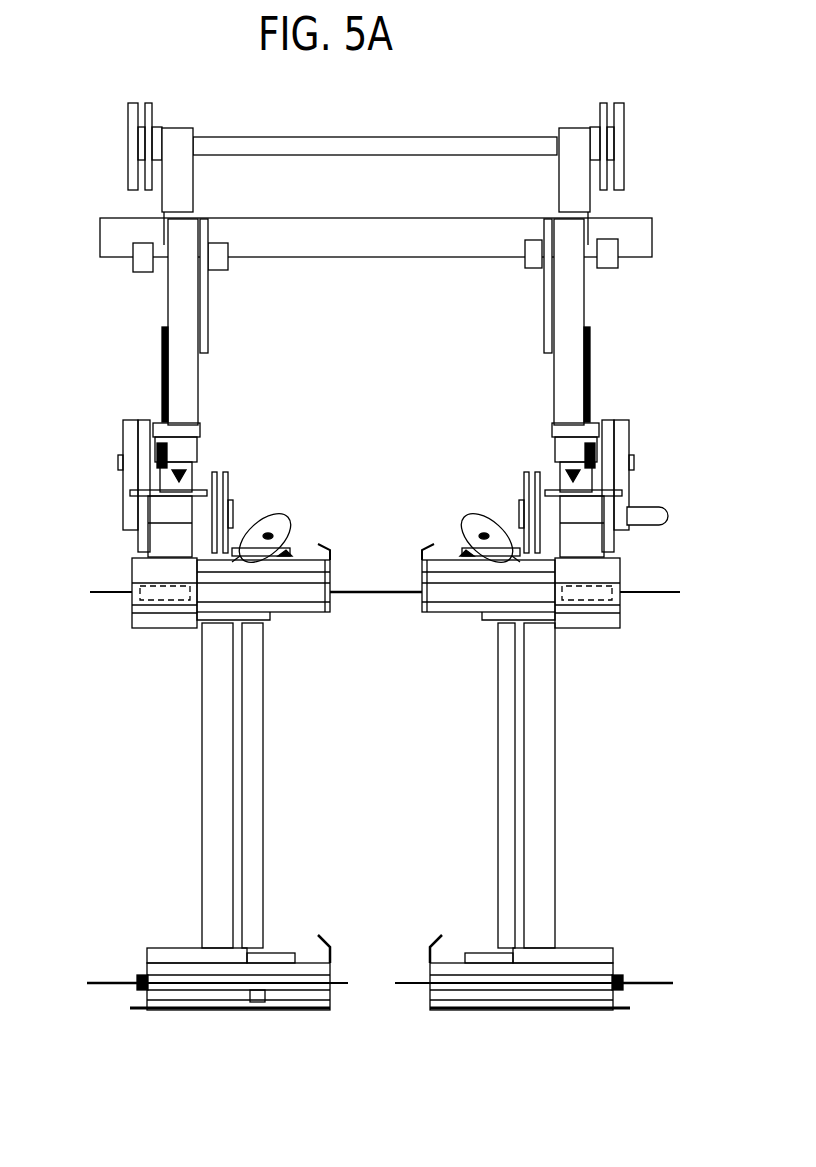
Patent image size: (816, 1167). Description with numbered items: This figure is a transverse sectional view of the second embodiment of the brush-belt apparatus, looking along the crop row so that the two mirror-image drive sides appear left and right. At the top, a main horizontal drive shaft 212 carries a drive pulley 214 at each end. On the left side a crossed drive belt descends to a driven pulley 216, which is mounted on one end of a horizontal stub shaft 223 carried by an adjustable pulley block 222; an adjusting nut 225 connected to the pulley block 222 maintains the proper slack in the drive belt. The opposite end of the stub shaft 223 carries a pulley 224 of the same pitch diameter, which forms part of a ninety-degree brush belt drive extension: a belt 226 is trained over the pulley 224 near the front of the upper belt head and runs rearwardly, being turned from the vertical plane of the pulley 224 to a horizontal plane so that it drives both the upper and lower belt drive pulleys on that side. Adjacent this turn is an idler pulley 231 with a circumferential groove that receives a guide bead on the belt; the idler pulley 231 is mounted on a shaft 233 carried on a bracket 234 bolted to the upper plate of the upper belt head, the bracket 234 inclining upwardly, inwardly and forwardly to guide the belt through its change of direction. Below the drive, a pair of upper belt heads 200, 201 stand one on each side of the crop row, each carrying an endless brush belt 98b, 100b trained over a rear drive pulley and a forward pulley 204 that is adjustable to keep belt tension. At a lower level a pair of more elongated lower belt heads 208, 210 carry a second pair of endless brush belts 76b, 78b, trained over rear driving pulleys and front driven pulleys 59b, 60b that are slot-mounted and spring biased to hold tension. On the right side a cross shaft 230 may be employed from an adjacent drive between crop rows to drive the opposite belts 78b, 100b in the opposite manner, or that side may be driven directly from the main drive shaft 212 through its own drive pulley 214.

The main horizontal drive shaft 212 is at (418, 137).
The drive pulley 214 is at (130, 118).
The upper belt head 200 is at (193, 634).
The upper belt head 201 is at (577, 637).
The forward pulley 204 is at (290, 600).
The lower belt head 208 is at (147, 938).
The lower belt head 210 is at (466, 938).
The driven pulley 216 is at (137, 490).
The adjustable pulley block 222 is at (124, 543).
The horizontal stub shaft 223 is at (180, 522).
The pulley 224 is at (226, 500).
The adjusting nut 225 is at (188, 480).
The belt 226 is at (233, 507).
The cross shaft 230 is at (653, 508).
The idler pulley 231 is at (283, 522).
The shaft 233 is at (288, 548).
The bracket 234 is at (292, 556).
The endless brush belt 98b is at (326, 606).
The endless brush belt 100b is at (428, 604).
The driven pulley 59b is at (255, 986).
The driven pulley 60b is at (573, 986).
The endless brush belt 76b is at (135, 990).
The endless brush belt 78b is at (432, 990).